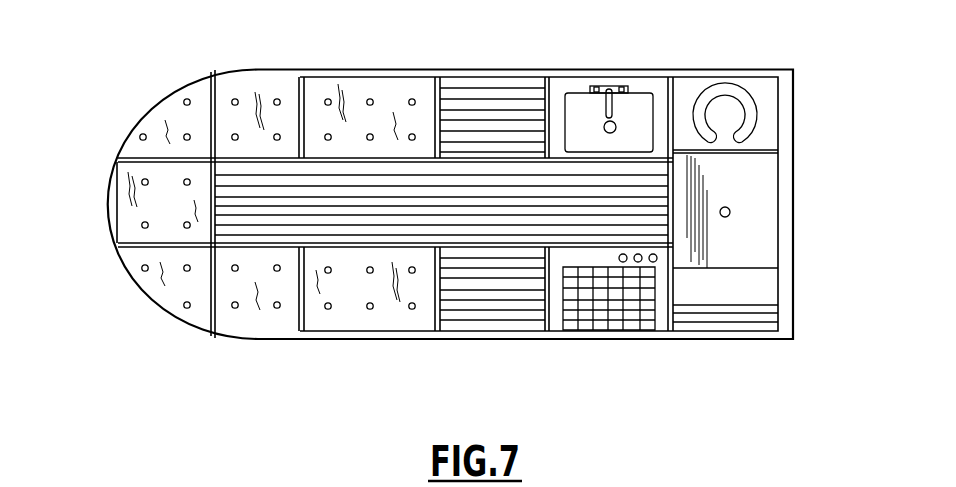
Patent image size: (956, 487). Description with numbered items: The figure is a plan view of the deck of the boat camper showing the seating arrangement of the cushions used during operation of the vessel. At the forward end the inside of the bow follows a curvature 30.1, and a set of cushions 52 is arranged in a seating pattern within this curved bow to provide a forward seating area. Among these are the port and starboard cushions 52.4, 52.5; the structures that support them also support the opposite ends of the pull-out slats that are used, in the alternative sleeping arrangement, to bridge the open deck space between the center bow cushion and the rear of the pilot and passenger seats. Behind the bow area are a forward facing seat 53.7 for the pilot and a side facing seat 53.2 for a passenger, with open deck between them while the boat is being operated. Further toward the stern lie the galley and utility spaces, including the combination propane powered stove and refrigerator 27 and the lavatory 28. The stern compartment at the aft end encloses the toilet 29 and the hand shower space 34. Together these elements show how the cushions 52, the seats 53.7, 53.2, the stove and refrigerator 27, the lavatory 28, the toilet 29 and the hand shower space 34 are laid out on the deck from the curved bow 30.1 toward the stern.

The curvature of the inside of the bow 30.1 is at (110, 233).
The set of cushions 52 is at (122, 190).
The starboard cushion 52.5 is at (257, 69).
The port cushion 52.4 is at (265, 342).
The forward facing seat 53.7 is at (388, 100).
The side facing seat 53.2 is at (360, 310).
The lavatory 28 is at (633, 107).
The toilet 29 is at (737, 113).
The hand shower space 34 is at (757, 223).
The combination propane powered stove and refrigerator 27 is at (630, 325).